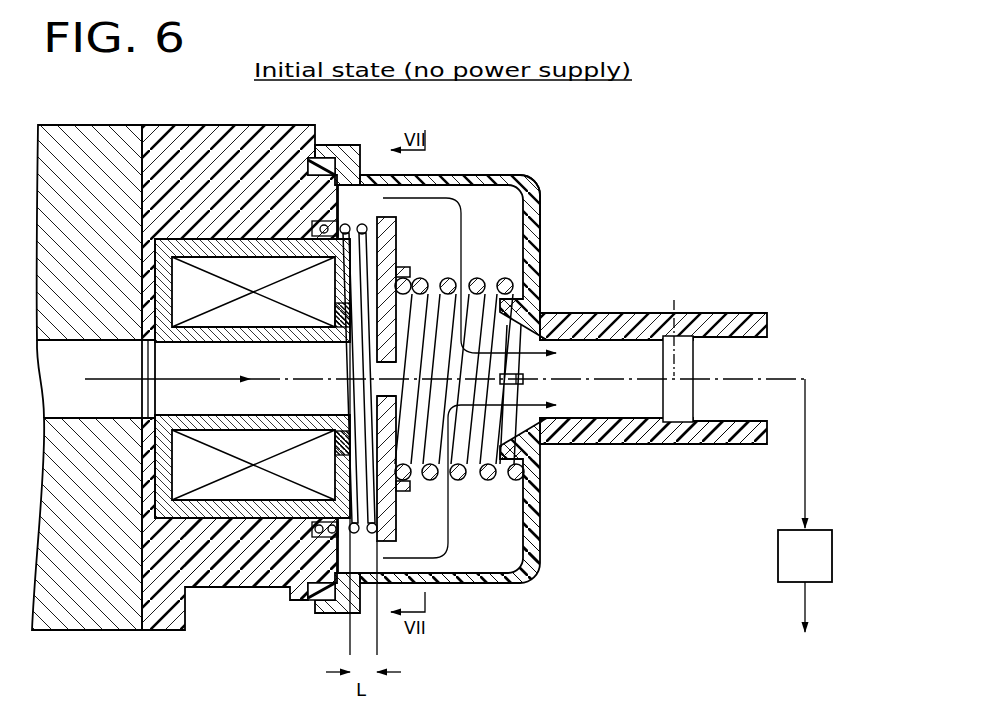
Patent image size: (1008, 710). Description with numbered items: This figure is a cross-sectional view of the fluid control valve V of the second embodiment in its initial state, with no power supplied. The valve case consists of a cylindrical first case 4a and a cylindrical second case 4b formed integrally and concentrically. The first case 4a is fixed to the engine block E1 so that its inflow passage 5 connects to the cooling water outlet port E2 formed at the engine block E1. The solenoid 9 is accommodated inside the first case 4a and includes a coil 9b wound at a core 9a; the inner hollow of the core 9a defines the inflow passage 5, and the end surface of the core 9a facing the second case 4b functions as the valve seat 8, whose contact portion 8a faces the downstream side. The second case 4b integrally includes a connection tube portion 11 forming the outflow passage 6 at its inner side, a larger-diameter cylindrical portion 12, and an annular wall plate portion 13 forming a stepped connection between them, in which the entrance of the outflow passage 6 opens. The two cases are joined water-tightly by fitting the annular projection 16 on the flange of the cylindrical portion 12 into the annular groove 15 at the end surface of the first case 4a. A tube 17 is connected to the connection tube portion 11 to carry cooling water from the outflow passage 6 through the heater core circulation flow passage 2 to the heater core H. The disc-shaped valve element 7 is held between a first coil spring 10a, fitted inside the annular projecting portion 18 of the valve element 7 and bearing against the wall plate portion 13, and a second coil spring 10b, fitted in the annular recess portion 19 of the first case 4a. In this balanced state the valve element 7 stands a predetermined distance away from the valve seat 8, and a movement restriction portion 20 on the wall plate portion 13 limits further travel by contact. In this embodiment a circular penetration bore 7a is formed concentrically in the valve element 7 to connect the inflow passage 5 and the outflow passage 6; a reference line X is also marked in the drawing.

The engine block E1 is at (67, 136).
The cooling water outlet port E2 is at (66, 397).
The heater core circulation flow passage 2 is at (805, 484).
The first case 4a is at (185, 136).
The second case 4b is at (492, 176).
The inflow passage 5 is at (207, 400).
The outflow passage 6 is at (620, 362).
The valve element 7 is at (397, 226).
The penetration bore 7a is at (383, 388).
The valve seat 8 is at (355, 288).
The contact portion 8a is at (378, 496).
The solenoid 9 is at (261, 239).
The core 9a is at (268, 512).
The coil 9b is at (247, 494).
The first coil spring 10a is at (481, 277).
The second coil spring 10b is at (362, 223).
The connection tube portion 11 is at (632, 444).
The cylindrical portion 12 is at (496, 585).
The wall plate portion 13 is at (542, 540).
The annular groove 15 is at (323, 243).
The annular projection 16 is at (323, 221).
The tube 17 is at (728, 318).
The annular projecting portion 18 is at (405, 278).
The annular recess portion 19 is at (332, 522).
The movement restriction portion 20 is at (520, 478).
The fluid control valve V is at (663, 218).
The seat axis X is at (676, 300).
The heater core H is at (778, 562).